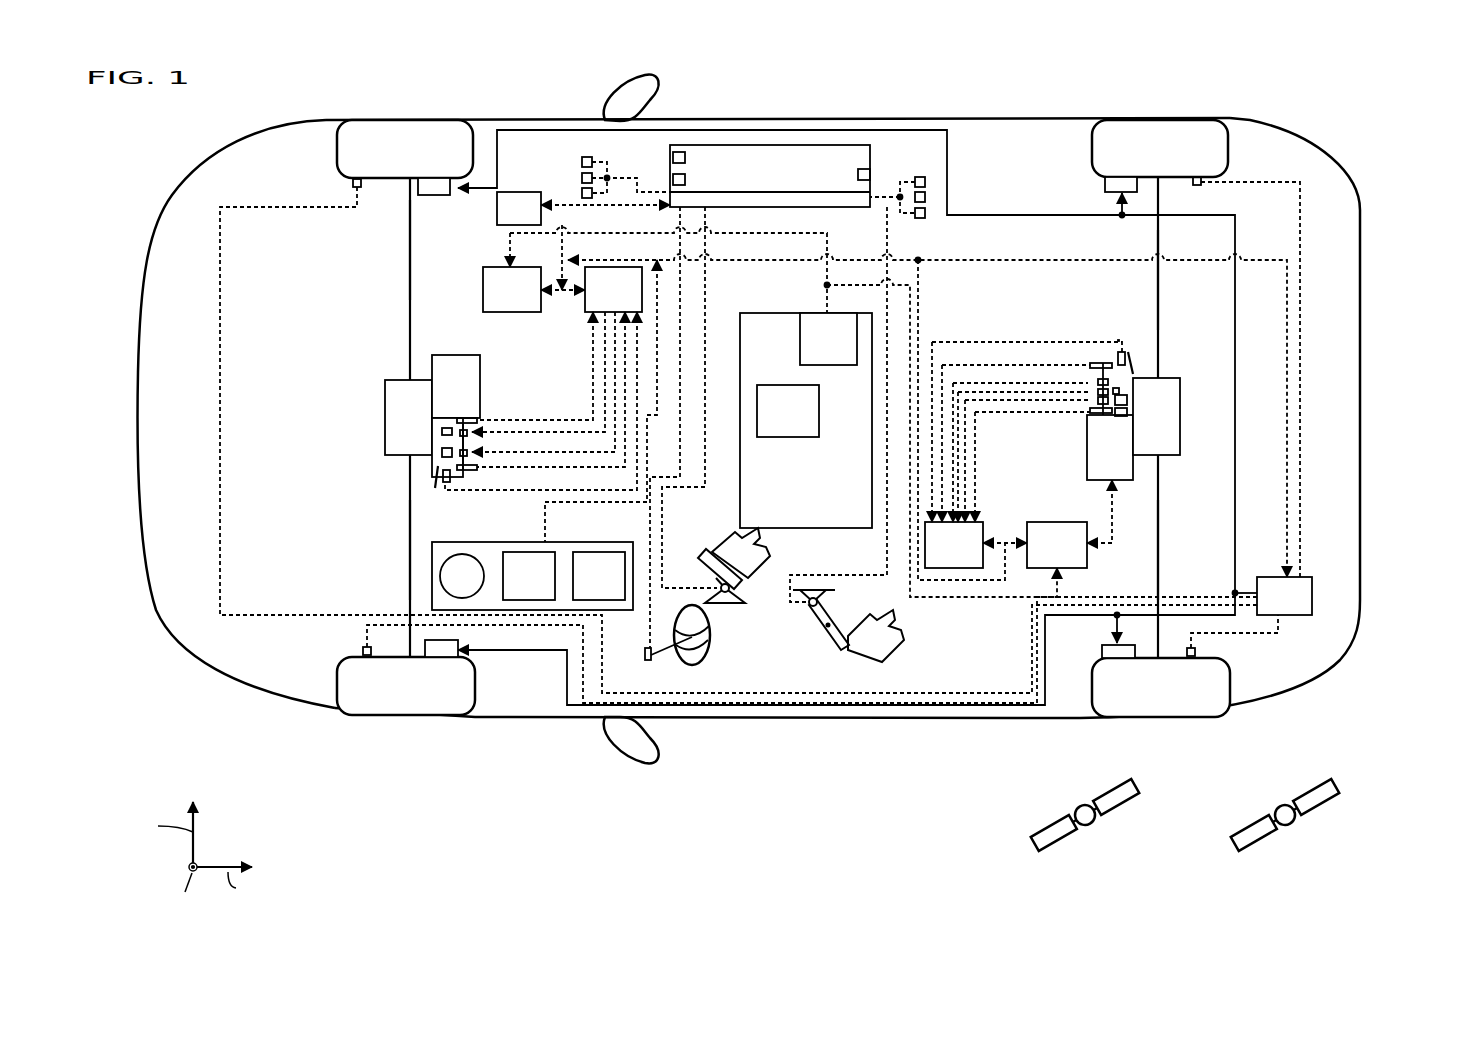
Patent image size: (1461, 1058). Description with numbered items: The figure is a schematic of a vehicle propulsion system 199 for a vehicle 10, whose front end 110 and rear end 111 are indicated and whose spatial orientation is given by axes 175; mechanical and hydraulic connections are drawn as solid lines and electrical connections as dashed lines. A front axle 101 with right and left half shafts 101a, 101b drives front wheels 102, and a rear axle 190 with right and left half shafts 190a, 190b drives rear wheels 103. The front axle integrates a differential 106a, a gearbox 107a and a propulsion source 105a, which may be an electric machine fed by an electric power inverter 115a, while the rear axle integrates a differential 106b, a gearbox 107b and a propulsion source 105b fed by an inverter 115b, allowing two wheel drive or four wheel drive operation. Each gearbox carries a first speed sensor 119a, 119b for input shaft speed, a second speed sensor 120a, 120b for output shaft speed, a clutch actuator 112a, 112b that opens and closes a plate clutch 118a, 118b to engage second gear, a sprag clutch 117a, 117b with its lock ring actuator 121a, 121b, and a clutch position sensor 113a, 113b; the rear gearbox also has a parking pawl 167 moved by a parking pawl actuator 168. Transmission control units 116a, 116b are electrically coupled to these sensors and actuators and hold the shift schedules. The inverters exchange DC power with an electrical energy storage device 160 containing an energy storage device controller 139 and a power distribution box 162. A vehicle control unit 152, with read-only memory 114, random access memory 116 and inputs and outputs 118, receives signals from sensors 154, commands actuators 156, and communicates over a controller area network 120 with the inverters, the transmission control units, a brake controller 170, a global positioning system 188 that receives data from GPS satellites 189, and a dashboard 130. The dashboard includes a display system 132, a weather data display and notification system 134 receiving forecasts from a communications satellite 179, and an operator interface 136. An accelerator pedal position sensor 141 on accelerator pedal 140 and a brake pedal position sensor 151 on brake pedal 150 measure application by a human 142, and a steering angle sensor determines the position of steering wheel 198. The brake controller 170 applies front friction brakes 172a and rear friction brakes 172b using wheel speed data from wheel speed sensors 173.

The vehicle 10 is at (975, 118).
The front axle 101 is at (365, 463).
The right half shaft 101a is at (410, 240).
The left half shaft 101b is at (410, 578).
The front wheels 102 is at (412, 127).
The rear wheels 103 is at (1155, 122).
The propulsion source 105a is at (463, 360).
The propulsion source 105b is at (1088, 463).
The differential 106a is at (386, 386).
The differential 106b is at (1176, 383).
The gearbox 107a is at (437, 488).
The gearbox 107b is at (1127, 350).
The front end 110 is at (100, 212).
The rear end 111 is at (1405, 153).
The clutch actuator 112a is at (468, 432).
The clutch actuator 112b is at (1092, 394).
The plate clutch position sensor 113a is at (452, 478).
The clutch position sensor 113b is at (1119, 350).
The read-only memory 114 is at (673, 157).
The electric power inverter 115a is at (534, 289).
The electric power inverter 115b is at (1069, 524).
The random access memory 116 is at (673, 179).
The transmission control unit 116a is at (613, 289).
The transmission control unit 116b is at (976, 545).
The sprag clutch 117a is at (442, 431).
The sprag clutch 117b is at (1127, 412).
The inputs and outputs 118 is at (818, 210).
The plate clutch 118a is at (442, 452).
The plate clutch 118b is at (1127, 400).
The first speed sensor 119a is at (467, 418).
The first speed sensor 119b is at (1092, 412).
The controller area network 120 is at (562, 255).
The second speed sensor 120a is at (477, 468).
The second speed sensor 120b is at (1090, 362).
The sprag clutch lock ring actuator 121a is at (470, 452).
The sprag clutch lock ring actuator 121b is at (1090, 382).
The dashboard 130 is at (450, 542).
The display system 132 is at (462, 576).
The interactive weather data display and notification system 134 is at (529, 576).
The operator interface 136 is at (599, 576).
The electric energy storage device controller 139 is at (788, 411).
The accelerator pedal 140 is at (700, 576).
The accelerator pedal position sensor 141 is at (730, 588).
The human 142 is at (735, 548).
The brake pedal 150 is at (840, 646).
The brake pedal position sensor 151 is at (808, 614).
The vehicle control unit 152 is at (770, 176).
The sensors 154 is at (572, 181).
The actuators 156 is at (931, 205).
The electrical energy storage device 160 is at (870, 173).
The electrical power distribution box 162 is at (828, 339).
The parking pawl 167 is at (1119, 391).
The parking pawl actuator 168 is at (1110, 388).
The friction brake controller 170 is at (1273, 596).
The front friction brakes 172a is at (422, 195).
The rear friction brakes 172b is at (1104, 186).
The wheel speed sensors 173 is at (351, 183).
The axes 175 is at (220, 813).
The communications satellite 179 is at (1127, 802).
The global positioning system 188 is at (583, 208).
The GPS satellites 189 is at (1327, 802).
The rear axle 190 is at (1174, 478).
The right half shaft 190a is at (1160, 312).
The left half shaft 190b is at (1158, 562).
The steering wheel 198 is at (706, 656).
The vehicle propulsion system 199 is at (647, 652).